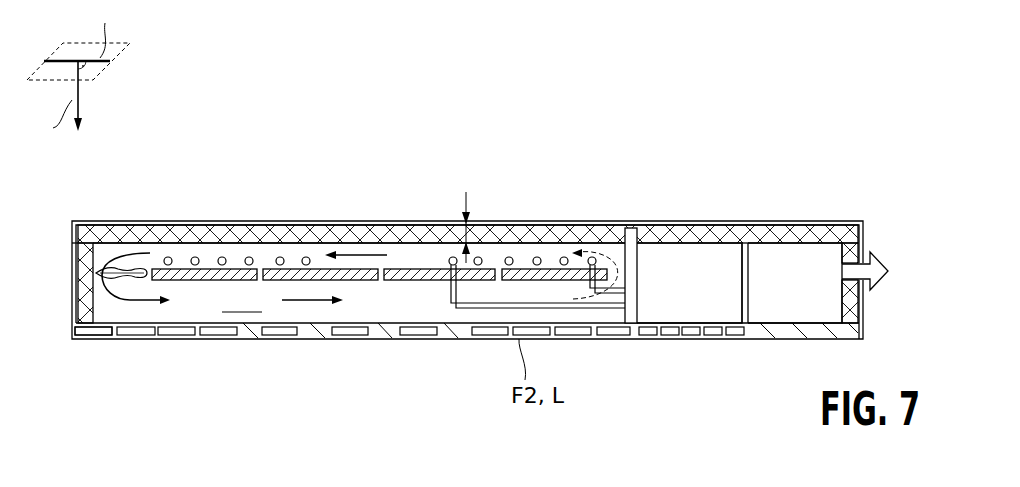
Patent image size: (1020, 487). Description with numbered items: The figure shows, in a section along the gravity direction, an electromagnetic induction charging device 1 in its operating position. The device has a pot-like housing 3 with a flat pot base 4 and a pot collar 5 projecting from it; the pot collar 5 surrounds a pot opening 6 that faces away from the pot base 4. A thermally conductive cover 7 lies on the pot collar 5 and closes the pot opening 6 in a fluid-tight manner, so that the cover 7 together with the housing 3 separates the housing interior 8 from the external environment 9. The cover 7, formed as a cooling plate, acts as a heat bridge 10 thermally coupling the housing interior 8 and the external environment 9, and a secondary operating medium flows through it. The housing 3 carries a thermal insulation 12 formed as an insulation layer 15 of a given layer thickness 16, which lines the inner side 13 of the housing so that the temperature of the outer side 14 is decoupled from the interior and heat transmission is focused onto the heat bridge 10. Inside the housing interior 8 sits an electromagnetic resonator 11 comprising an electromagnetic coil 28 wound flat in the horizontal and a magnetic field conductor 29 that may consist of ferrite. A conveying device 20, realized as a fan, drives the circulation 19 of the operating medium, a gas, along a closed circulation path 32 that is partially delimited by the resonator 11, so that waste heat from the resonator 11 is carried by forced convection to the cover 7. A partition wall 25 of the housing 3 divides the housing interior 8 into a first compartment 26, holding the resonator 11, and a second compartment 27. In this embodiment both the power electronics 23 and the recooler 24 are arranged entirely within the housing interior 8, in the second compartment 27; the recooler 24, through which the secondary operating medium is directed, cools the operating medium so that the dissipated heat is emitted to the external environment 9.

The electromagnetic induction charging device 1 is at (833, 143).
The housing 3 is at (468, 186).
The pot base 4 is at (186, 223).
The pot collar 5 is at (77, 268).
The pot opening 6 is at (90, 338).
The cover 7 is at (467, 364).
The housing interior 8 is at (368, 312).
The external environment 9 is at (66, 189).
The heat bridge 10 is at (383, 339).
The electromagnetic resonator 11 is at (408, 254).
The thermal insulation 12 is at (468, 199).
The inner side 13 is at (73, 250).
The outer side 14 is at (130, 220).
The insulation layer 15 is at (522, 237).
The layer thickness 16 is at (468, 200).
The circulation 19 is at (300, 304).
The conveying device 20 is at (76, 285).
The power electronics 23 is at (713, 294).
The recooler 24 is at (810, 294).
The partition wall 25 is at (626, 258).
The first compartment 26 is at (433, 312).
The second compartment 27 is at (744, 246).
The electromagnetic coil 28 is at (248, 257).
The magnetic field conductor 29 is at (379, 227).
The circulation path 32 is at (199, 312).